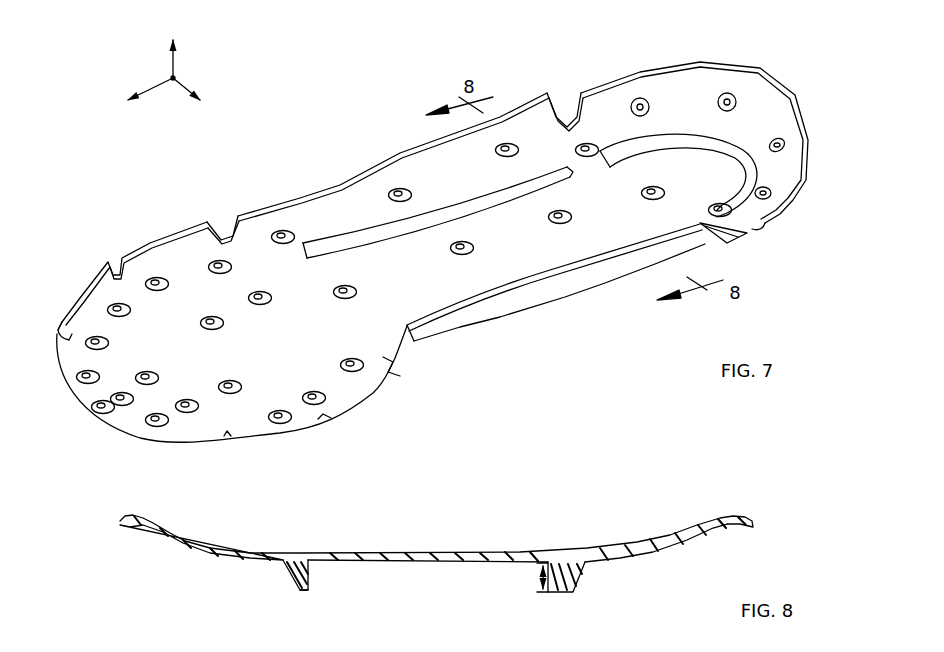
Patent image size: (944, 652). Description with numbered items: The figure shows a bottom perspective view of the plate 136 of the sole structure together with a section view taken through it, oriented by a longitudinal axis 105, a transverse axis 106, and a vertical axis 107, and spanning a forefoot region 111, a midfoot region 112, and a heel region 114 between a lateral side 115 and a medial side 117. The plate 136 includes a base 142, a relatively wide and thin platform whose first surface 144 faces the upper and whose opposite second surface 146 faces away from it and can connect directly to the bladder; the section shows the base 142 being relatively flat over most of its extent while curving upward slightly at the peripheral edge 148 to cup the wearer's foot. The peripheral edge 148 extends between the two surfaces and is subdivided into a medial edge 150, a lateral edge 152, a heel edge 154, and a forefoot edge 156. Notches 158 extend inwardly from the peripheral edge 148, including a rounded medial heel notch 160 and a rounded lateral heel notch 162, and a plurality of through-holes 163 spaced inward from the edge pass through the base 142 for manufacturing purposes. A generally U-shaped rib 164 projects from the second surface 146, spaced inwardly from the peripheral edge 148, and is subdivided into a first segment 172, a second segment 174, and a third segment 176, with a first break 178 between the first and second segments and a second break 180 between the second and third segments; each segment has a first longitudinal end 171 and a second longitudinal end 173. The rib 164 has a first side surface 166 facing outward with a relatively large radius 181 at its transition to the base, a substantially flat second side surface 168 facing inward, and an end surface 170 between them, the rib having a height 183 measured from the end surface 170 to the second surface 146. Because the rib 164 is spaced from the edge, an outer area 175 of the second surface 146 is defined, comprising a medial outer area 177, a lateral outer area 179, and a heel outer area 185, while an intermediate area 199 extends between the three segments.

In FIG. 7, the longitudinal axis 105 is at (127, 96).
In FIG. 7, the transverse axis 106 is at (199, 103).
In FIG. 7, the vertical axis 107 is at (175, 43).
In FIG. 7, the forefoot region 111 is at (112, 433).
In FIG. 7, the midfoot region 112 is at (409, 294).
In FIG. 7, the heel region 114 is at (808, 133).
In FIG. 7, the lateral side 115 is at (321, 180).
In FIG. 8, the lateral side 115 is at (120, 528).
In FIG. 7, the medial side 117 is at (500, 318).
In FIG. 8, the medial side 117 is at (760, 517).
In FIG. 7, the plate 136 is at (108, 213).
In FIG. 8, the plate 136 is at (694, 493).
In FIG. 7, the base 142 is at (160, 255).
In FIG. 8, the base 142 is at (372, 550).
In FIG. 7, the first surface 144 is at (634, 71).
In FIG. 8, the first surface 144 is at (472, 552).
In FIG. 7, the second surface 146 is at (254, 357).
In FIG. 8, the second surface 146 is at (458, 562).
In FIG. 7, the peripheral edge 148 is at (257, 203).
In FIG. 8, the peripheral edge 148 is at (120, 521).
In FIG. 7, the medial edge 150 is at (565, 299).
In FIG. 8, the medial edge 150 is at (754, 528).
In FIG. 7, the lateral edge 152 is at (288, 195).
In FIG. 8, the lateral edge 152 is at (121, 518).
In FIG. 7, the heel edge 154 is at (767, 121).
In FIG. 7, the forefoot edge 156 is at (63, 388).
In FIG. 7, the notches 158 is at (225, 235).
In FIG. 7, the medial heel notch 160 is at (765, 230).
In FIG. 7, the lateral heel notch 162 is at (565, 125).
In FIG. 7, the through-holes 163 is at (249, 296).
In FIG. 7, the rib 164 is at (495, 210).
In FIG. 8, the rib 164 is at (296, 586).
In FIG. 7, the first side surface 166 is at (387, 232).
In FIG. 8, the first side surface 166 is at (288, 571).
In FIG. 7, the second side surface 168 is at (615, 262).
In FIG. 8, the second side surface 168 is at (318, 566).
In FIG. 7, the end surface 170 is at (408, 238).
In FIG. 8, the end surface 170 is at (303, 593).
In FIG. 7, the first longitudinal end 171 is at (378, 358).
In FIG. 7, the first segment 172 is at (590, 268).
In FIG. 7, the second longitudinal end 173 is at (717, 228).
In FIG. 7, the second segment 174 is at (753, 163).
In FIG. 7, the outer area 175 is at (523, 140).
In FIG. 8, the outer area 175 is at (171, 546).
In FIG. 7, the third segment 176 is at (352, 240).
In FIG. 7, the medial outer area 177 is at (530, 304).
In FIG. 8, the medial outer area 177 is at (657, 554).
In FIG. 7, the first break 178 is at (727, 235).
In FIG. 7, the lateral outer area 179 is at (428, 186).
In FIG. 8, the lateral outer area 179 is at (205, 554).
In FIG. 7, the second break 180 is at (577, 167).
In FIG. 8, the radius 181 is at (582, 574).
In FIG. 8, the height 183 is at (542, 578).
In FIG. 7, the heel outer area 185 is at (790, 122).
In FIG. 7, the intermediate area 199 is at (592, 218).
In FIG. 8, the intermediate area 199 is at (388, 562).